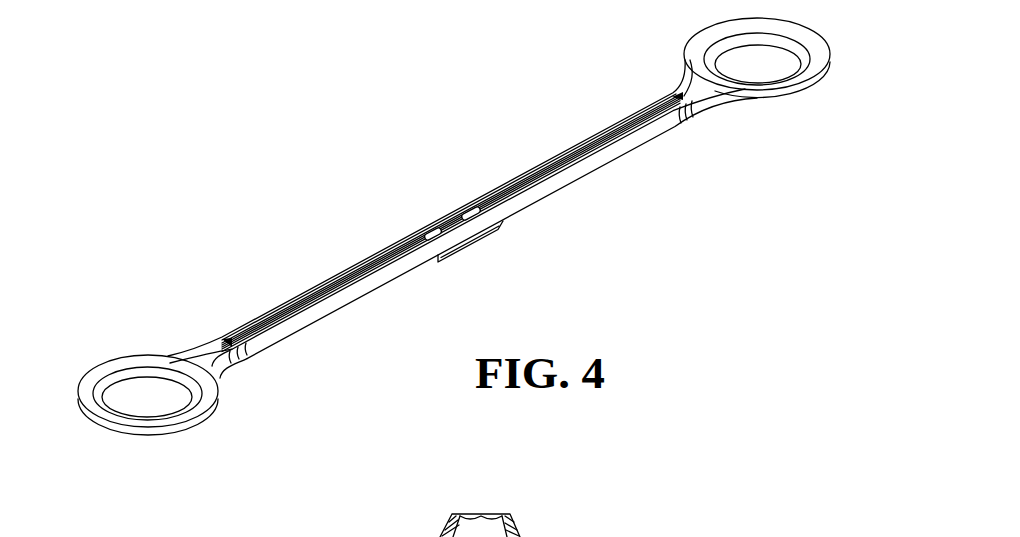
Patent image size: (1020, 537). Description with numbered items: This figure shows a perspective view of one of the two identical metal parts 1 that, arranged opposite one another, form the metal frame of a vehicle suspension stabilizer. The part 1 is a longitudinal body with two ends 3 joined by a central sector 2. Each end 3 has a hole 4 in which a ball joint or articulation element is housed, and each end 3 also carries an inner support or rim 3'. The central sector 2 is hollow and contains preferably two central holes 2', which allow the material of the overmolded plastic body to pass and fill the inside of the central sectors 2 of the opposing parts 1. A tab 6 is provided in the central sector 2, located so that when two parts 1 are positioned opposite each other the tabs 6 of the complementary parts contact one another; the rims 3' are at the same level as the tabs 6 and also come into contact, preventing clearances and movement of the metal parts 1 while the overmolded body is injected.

The metal part 1 is at (348, 246).
The central sector 2 is at (452, 220).
The central hole 2' is at (452, 188).
The end 3 is at (454, 222).
The inner support or rim 3' is at (454, 276).
The hole 4 is at (156, 404).
The tab 6 is at (467, 247).